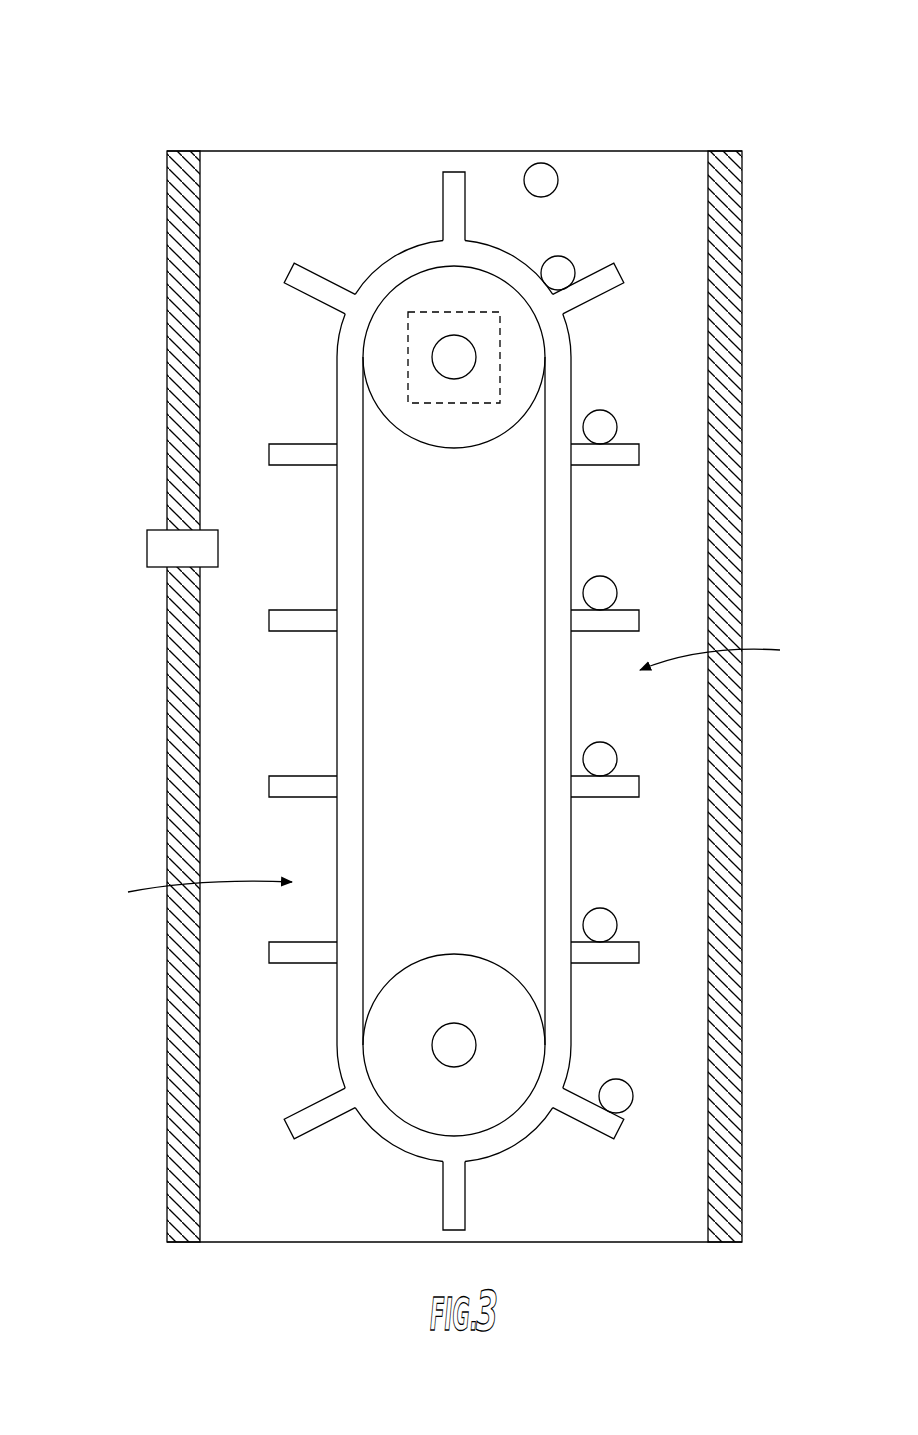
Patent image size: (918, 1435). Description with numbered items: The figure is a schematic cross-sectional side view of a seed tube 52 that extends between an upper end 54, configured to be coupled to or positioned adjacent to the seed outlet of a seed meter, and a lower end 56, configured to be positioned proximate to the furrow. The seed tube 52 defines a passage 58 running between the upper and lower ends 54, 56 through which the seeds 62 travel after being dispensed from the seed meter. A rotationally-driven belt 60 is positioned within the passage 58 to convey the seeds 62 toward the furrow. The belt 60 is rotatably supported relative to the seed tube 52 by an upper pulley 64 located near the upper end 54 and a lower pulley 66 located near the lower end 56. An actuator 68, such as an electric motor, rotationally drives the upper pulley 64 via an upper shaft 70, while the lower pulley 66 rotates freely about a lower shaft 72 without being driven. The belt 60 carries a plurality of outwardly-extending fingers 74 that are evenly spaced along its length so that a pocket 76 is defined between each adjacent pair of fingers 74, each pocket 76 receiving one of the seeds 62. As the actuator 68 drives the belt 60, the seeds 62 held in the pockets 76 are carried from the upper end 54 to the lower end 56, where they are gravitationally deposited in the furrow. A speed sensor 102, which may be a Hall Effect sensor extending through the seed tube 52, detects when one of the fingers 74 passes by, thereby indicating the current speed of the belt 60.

The seed tube 52 is at (406, 645).
The upper end 54 is at (690, 150).
The lower end 56 is at (657, 1243).
The passage 58 is at (323, 197).
The rotationally-driven belt 60 is at (490, 262).
The seeds 62 is at (541, 170).
The upper pulley 64 is at (457, 449).
The lower pulley 66 is at (432, 956).
The actuator 68 is at (436, 312).
The upper shaft 70 is at (460, 367).
The lower shaft 72 is at (460, 1038).
The fingers 74 is at (617, 466).
The pocket 76 is at (456, 772).
The speed sensor 102 is at (147, 547).